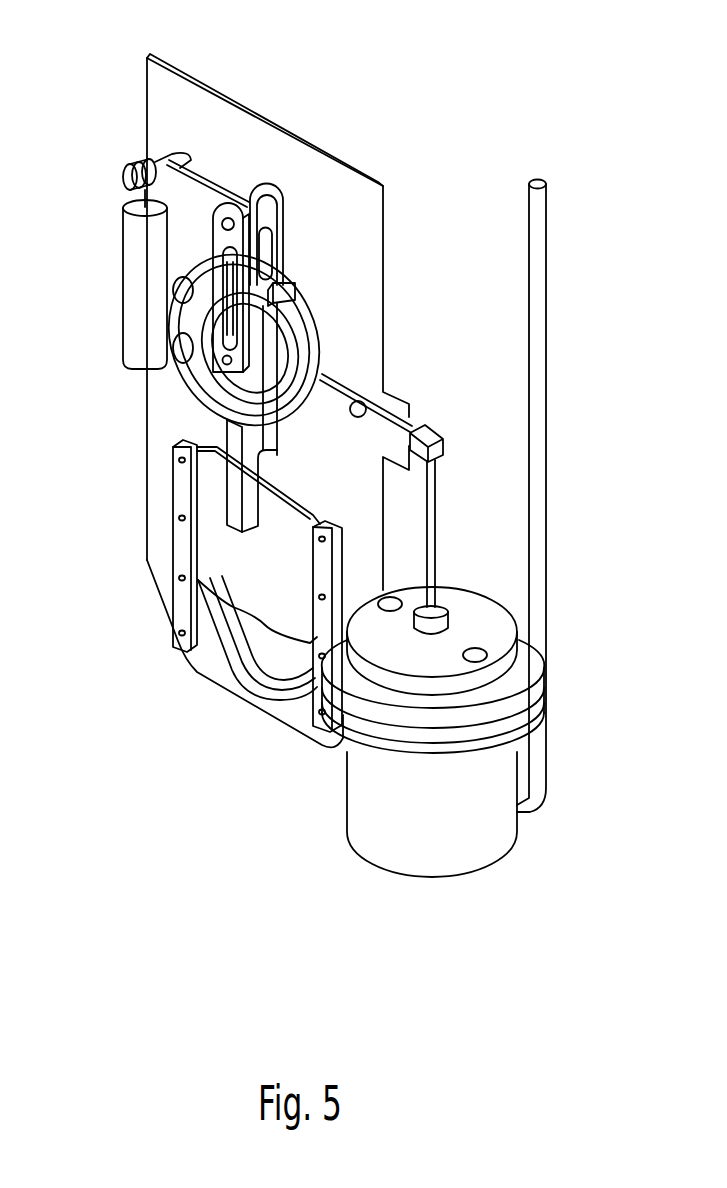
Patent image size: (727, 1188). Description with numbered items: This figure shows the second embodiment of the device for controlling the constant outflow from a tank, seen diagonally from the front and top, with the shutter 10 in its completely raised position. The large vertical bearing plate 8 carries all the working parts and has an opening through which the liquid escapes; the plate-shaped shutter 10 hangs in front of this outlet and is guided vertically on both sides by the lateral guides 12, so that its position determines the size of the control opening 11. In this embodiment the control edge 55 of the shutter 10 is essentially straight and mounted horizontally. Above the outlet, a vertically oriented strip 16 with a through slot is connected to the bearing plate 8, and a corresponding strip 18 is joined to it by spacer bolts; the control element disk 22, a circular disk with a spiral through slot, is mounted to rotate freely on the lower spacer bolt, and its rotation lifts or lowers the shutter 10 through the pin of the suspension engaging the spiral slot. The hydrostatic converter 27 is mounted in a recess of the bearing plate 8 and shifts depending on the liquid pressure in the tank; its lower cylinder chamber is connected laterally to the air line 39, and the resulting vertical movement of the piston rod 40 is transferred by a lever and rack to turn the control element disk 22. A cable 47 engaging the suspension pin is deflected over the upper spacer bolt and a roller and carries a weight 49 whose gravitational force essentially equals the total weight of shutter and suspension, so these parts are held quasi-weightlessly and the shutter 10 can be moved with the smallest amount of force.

The bearing plate 8 is at (288, 158).
The shutter 10 is at (220, 543).
The control opening 11 is at (272, 667).
The lateral guides 12 is at (178, 492).
The strip 16 is at (270, 222).
The strip 18 is at (240, 240).
The control element disk 22 is at (207, 393).
The hydrostatic converter 27 is at (367, 810).
The line 39 is at (547, 460).
The piston rod 40 is at (432, 548).
The cable 47 is at (203, 180).
The weight 49 is at (140, 254).
The control edge 55 is at (222, 682).